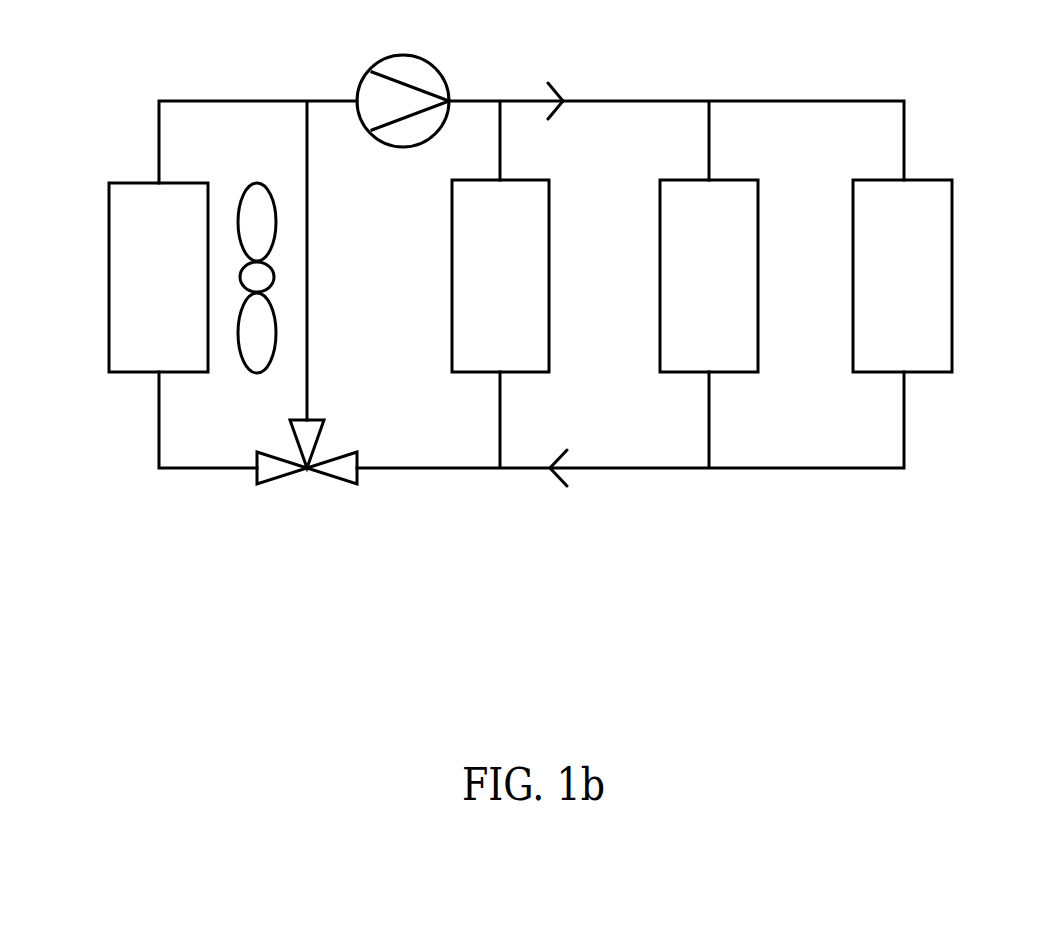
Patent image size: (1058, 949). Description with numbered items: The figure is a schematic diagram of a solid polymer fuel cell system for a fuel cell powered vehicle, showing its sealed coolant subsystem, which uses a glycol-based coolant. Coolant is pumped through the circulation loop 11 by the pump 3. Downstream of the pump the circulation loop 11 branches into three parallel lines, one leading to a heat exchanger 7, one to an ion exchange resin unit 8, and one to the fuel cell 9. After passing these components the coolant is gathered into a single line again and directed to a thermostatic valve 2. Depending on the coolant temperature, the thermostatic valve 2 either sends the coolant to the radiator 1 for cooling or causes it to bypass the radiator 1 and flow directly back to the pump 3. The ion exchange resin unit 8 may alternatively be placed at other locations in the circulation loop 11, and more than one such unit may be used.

The radiator 1 is at (145, 215).
The thermostatic valve 2 is at (307, 468).
The pump 3 is at (447, 72).
The heat exchanger 7 is at (486, 260).
The ion exchange resin unit 8 is at (696, 260).
The fuel cell 9 is at (888, 260).
The circulation loop 11 is at (820, 97).